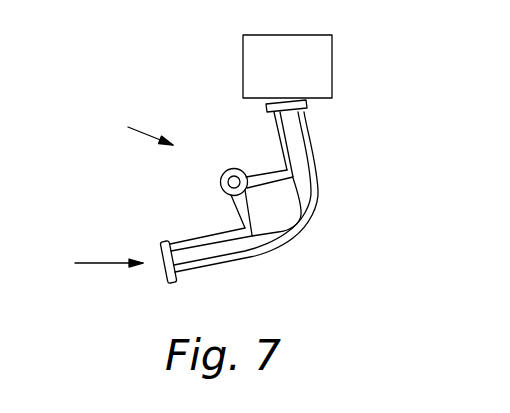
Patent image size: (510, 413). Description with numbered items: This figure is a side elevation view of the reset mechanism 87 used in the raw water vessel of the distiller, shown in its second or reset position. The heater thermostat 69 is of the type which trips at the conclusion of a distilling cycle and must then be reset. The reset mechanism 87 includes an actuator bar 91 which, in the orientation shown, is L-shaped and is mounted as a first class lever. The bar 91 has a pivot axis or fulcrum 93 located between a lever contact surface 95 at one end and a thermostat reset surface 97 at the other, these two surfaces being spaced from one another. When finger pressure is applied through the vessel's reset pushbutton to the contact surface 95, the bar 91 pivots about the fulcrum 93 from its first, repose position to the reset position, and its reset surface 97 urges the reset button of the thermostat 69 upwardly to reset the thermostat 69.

The heater thermostat 69 is at (243, 51).
The reset mechanism 87 is at (129, 129).
The actuator bar 91 is at (316, 163).
The fulcrum 93 is at (220, 184).
The lever contact surface 95 is at (165, 267).
The thermostat reset surface 97 is at (270, 106).